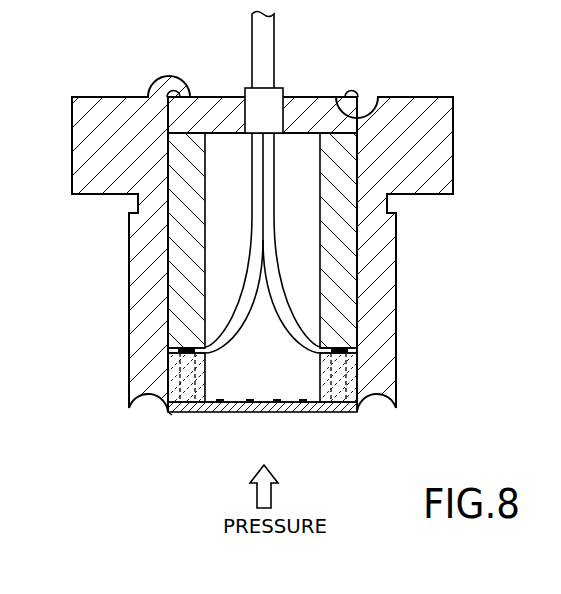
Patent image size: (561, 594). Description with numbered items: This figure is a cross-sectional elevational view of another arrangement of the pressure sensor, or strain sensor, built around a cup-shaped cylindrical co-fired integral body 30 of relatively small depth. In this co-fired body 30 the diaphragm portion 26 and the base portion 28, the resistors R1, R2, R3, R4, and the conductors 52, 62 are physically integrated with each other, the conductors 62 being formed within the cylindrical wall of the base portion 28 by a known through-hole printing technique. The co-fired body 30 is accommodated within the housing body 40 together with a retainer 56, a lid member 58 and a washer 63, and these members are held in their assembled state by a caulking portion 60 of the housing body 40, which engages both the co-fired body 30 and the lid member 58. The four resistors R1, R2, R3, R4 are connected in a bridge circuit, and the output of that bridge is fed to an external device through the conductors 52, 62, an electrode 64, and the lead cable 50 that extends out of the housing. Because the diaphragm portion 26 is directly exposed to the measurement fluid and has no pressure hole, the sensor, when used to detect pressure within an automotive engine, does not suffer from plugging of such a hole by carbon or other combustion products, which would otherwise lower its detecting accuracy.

The diaphragm portion 26 is at (233, 413).
The base portion 28 is at (346, 363).
The co-fired integral body 30 is at (368, 393).
The housing body 40 is at (453, 125).
The lead cable 50 is at (252, 40).
The conductor 52 is at (322, 407).
The retainer 56 is at (186, 258).
The lid member 58 is at (307, 100).
The caulking portion 60 is at (355, 75).
The conductor 62 is at (182, 375).
The washer 63 is at (186, 416).
The electrode 64 is at (172, 336).
The resistor R1 is at (220, 399).
The resistor R2 is at (250, 399).
The resistor R3 is at (277, 399).
The resistor R4 is at (303, 399).